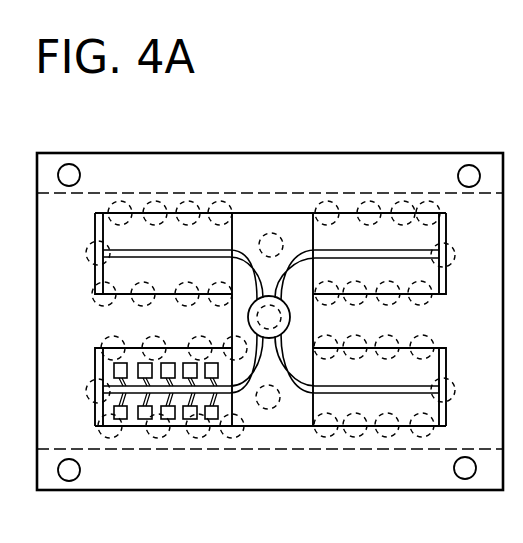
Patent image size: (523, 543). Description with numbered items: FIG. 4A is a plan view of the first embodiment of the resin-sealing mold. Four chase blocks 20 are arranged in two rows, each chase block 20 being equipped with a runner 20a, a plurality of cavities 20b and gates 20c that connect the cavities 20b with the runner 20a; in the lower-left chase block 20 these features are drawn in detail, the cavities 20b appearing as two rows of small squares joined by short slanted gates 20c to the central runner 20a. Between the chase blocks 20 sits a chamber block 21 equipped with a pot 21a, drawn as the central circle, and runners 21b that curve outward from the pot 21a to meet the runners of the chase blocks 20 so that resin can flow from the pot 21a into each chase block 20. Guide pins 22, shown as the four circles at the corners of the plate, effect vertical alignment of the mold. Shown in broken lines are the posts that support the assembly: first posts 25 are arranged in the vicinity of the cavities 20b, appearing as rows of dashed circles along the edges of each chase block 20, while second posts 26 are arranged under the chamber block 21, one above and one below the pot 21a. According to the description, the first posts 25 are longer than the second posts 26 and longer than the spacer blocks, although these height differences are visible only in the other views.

The chase block 20 is at (137, 215).
The runner 20a is at (115, 386).
The cavity 20b is at (117, 370).
The gate 20c is at (117, 402).
The chamber block 21 is at (245, 215).
The pot 21a is at (290, 313).
The runner 21b is at (292, 360).
The guide pin 22 is at (463, 165).
The first post 25 is at (155, 200).
The second post 26 is at (275, 232).